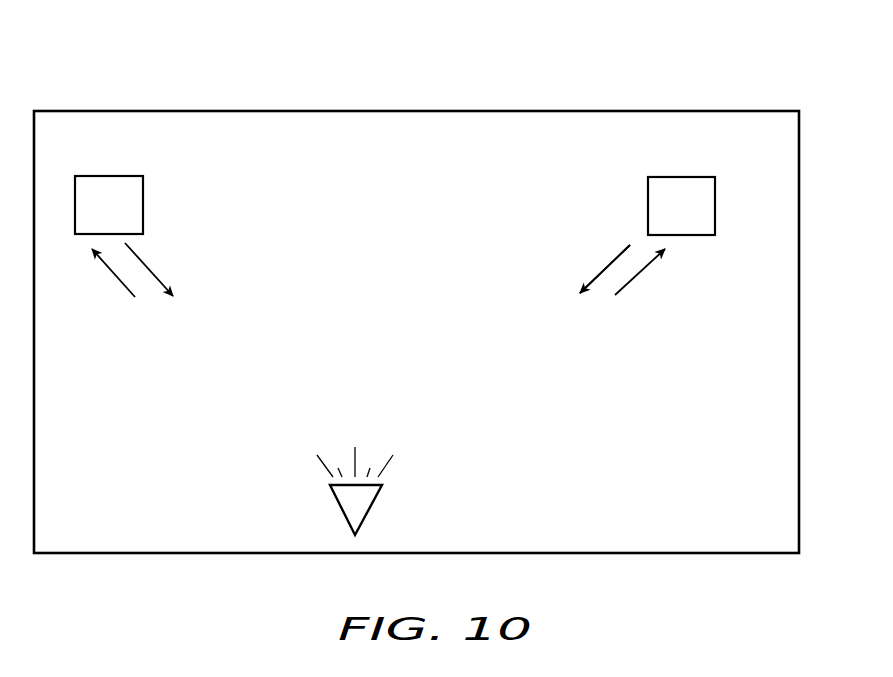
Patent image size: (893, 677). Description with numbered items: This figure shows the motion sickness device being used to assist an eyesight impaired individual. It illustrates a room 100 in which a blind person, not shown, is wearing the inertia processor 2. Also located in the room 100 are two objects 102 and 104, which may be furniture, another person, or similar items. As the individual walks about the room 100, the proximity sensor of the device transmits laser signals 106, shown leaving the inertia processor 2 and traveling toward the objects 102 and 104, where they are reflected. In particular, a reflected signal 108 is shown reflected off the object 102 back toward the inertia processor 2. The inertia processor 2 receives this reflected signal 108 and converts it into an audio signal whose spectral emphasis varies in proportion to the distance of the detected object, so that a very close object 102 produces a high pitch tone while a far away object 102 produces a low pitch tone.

The room 100 is at (697, 110).
The object 102 is at (715, 215).
The object 104 is at (143, 198).
The laser signals 106 is at (120, 283).
The reflected signal 108 is at (610, 260).
The inertia processor 2 is at (372, 507).